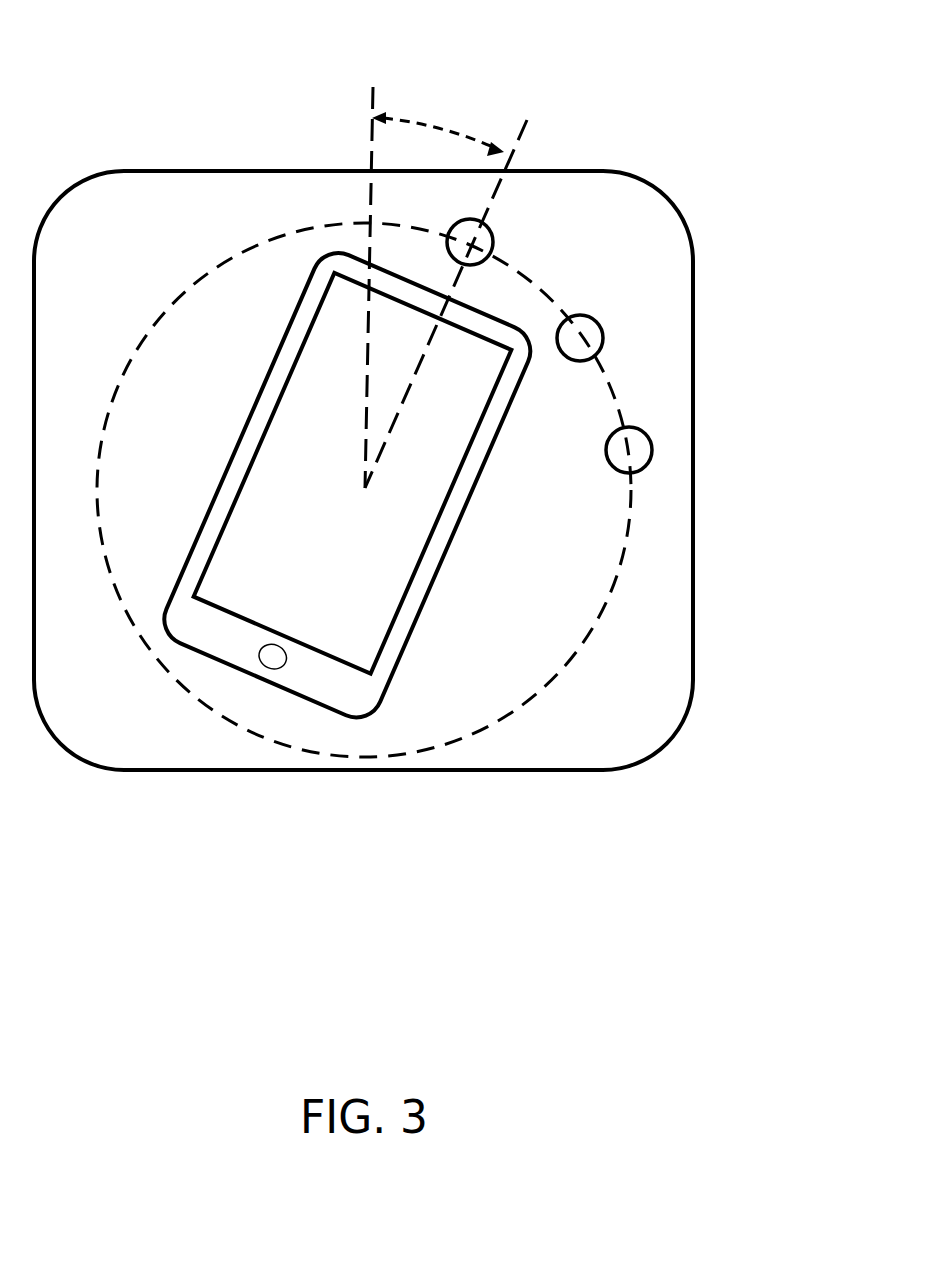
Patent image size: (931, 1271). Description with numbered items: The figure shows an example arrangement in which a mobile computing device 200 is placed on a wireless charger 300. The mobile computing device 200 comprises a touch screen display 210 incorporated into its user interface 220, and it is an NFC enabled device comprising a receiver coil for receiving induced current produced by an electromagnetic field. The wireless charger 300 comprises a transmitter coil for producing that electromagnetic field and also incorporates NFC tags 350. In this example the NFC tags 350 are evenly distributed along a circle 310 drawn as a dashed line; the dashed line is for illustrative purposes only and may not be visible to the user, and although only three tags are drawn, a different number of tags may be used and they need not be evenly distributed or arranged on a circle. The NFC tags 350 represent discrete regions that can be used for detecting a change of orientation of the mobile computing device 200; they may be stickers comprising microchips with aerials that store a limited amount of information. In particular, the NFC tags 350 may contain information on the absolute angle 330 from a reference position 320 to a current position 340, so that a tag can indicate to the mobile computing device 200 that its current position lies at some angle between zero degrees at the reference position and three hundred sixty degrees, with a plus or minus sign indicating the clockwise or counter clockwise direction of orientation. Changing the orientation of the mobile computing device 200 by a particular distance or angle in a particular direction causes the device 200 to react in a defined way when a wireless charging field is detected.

The mobile computing device 200 is at (240, 402).
The touch screen display 210 is at (353, 473).
The user interface 220 is at (353, 473).
The wireless charger 300 is at (693, 516).
The circle 310 is at (553, 679).
The reference position 320 is at (372, 95).
The absolute angle 330 is at (425, 115).
The current position 340 is at (521, 130).
The NFC tags 350 is at (493, 234).